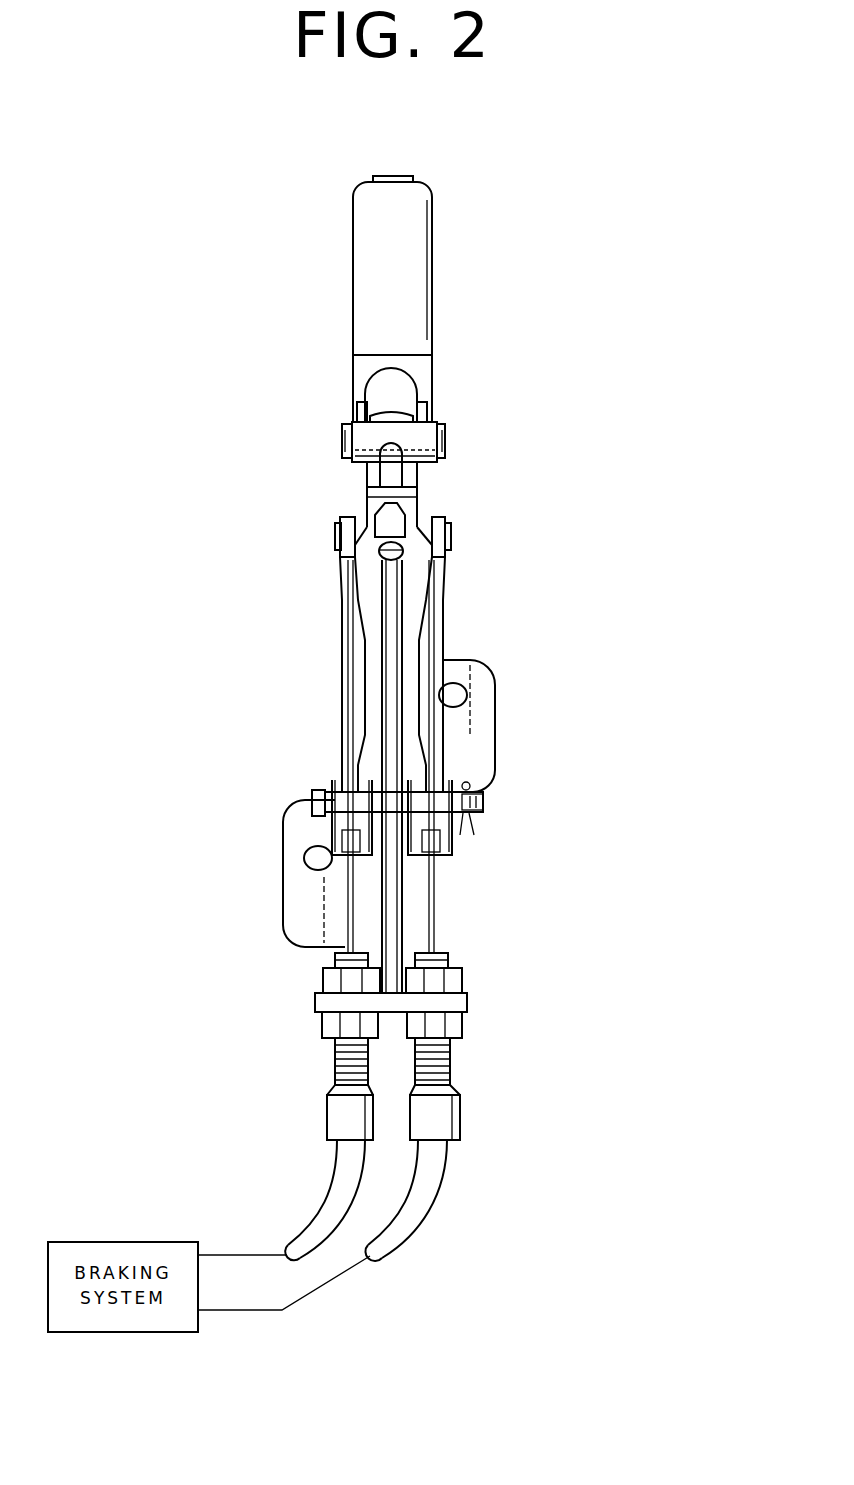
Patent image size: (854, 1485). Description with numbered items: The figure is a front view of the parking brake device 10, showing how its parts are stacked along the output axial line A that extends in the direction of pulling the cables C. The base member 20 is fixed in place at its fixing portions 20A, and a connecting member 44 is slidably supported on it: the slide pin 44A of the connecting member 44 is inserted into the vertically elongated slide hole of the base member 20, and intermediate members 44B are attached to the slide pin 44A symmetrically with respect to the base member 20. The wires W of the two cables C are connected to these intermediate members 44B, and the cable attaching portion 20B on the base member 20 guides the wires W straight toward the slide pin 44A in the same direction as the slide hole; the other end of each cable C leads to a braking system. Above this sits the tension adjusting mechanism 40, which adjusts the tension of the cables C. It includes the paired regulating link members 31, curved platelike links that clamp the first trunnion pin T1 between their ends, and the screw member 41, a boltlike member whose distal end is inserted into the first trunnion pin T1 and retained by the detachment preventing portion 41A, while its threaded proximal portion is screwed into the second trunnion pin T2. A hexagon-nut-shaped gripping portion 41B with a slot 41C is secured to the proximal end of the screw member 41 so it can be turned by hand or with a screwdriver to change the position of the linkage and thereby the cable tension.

The output axial line A is at (405, 162).
The parking brake device 10 is at (455, 631).
The base member 20 is at (377, 678).
The fixing portions 20A is at (472, 729).
The cable attaching portion 20B is at (467, 1000).
The regulating link members 31 is at (350, 420).
The tension adjusting mechanism 40 is at (320, 428).
The screw member 41 is at (395, 467).
The detachment preventing portion 41A is at (400, 385).
The gripping portion 41B is at (383, 522).
The slot 41C is at (397, 553).
The connecting member 44 is at (305, 780).
The slide pin 44A is at (487, 800).
The intermediate members 44B is at (335, 830).
The first trunnion pin T1 is at (414, 432).
The second trunnion pin T2 is at (404, 498).
The wires W is at (350, 922).
The cables C is at (345, 1162).